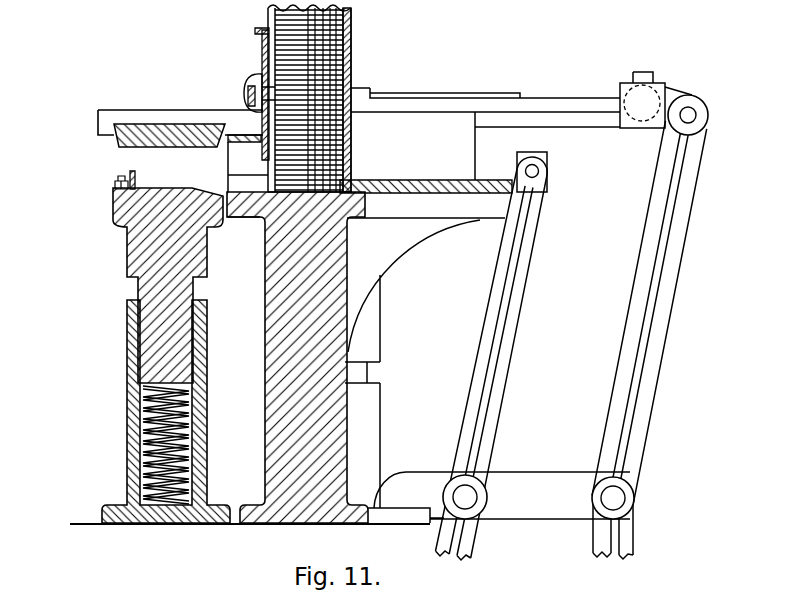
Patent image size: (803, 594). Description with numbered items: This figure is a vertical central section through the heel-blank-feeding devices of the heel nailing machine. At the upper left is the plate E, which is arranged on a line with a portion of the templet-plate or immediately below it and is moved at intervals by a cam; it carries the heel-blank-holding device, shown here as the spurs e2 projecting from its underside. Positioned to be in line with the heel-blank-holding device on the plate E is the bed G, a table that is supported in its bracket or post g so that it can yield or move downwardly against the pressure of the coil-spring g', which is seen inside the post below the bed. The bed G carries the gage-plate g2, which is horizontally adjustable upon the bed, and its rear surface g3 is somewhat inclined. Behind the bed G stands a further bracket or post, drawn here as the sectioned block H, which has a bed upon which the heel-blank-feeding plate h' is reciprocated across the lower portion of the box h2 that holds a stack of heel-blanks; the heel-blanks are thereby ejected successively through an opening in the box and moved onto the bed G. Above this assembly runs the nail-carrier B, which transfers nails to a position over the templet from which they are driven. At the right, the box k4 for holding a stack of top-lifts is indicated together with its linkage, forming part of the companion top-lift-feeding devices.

The plate E is at (172, 118).
The spurs e2 is at (140, 149).
The gage-plate g2 is at (116, 178).
The bed G is at (168, 285).
The rear surface of the bed g3 is at (243, 230).
The bracket or post g is at (166, 411).
The coil-spring g' is at (186, 445).
The frame block H is at (297, 357).
The heel-blank-feeding plate h' is at (426, 175).
The box h2 is at (362, 70).
The nail-carrier B is at (372, 93).
The box k4 is at (508, 318).